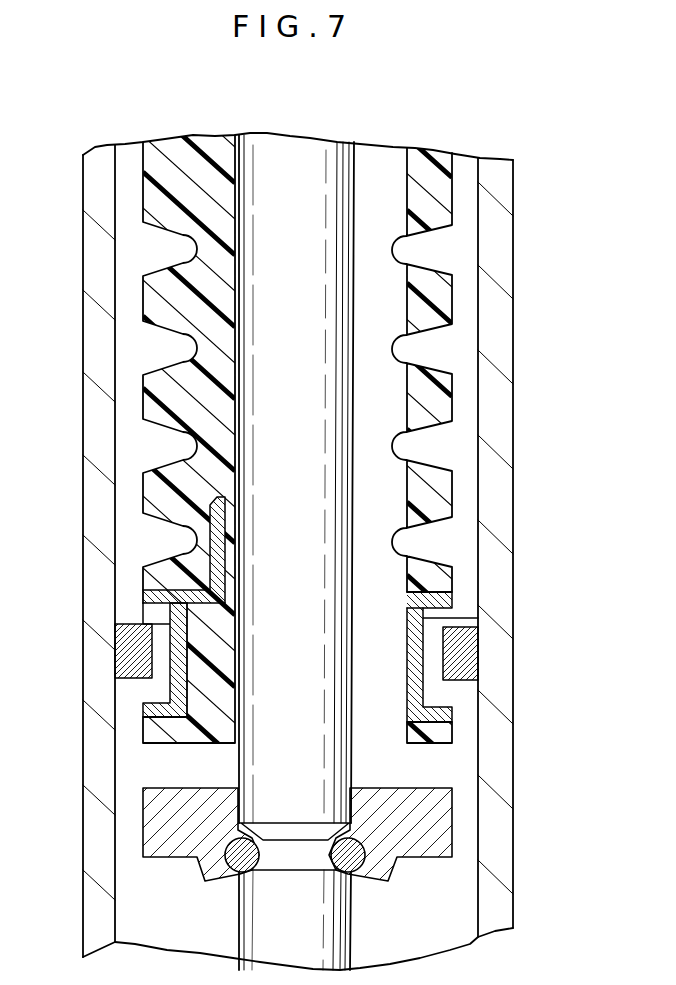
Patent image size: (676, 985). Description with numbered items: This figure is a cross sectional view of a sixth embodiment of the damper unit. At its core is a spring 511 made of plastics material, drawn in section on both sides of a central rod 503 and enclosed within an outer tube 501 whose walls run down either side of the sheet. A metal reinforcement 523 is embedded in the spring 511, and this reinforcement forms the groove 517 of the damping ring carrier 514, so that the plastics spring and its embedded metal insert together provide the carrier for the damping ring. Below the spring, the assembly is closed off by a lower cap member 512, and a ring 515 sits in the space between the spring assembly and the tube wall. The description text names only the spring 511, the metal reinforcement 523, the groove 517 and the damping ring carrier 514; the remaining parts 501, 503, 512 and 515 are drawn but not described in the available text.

The cylinder tube 501 is at (329, 550).
The piston rod 503 is at (314, 525).
The spring 511 is at (245, 447).
The closure cap 512 is at (298, 835).
The damping ring carrier 514 is at (131, 550).
The retaining ring 515 is at (259, 647).
The groove 517 is at (257, 662).
The metal reinforcement 523 is at (245, 589).